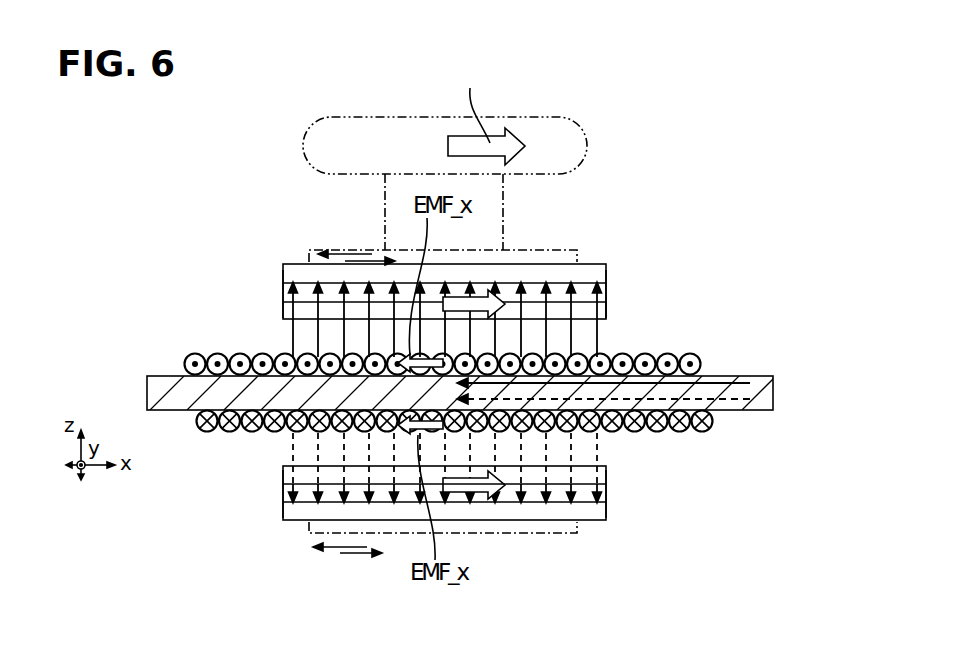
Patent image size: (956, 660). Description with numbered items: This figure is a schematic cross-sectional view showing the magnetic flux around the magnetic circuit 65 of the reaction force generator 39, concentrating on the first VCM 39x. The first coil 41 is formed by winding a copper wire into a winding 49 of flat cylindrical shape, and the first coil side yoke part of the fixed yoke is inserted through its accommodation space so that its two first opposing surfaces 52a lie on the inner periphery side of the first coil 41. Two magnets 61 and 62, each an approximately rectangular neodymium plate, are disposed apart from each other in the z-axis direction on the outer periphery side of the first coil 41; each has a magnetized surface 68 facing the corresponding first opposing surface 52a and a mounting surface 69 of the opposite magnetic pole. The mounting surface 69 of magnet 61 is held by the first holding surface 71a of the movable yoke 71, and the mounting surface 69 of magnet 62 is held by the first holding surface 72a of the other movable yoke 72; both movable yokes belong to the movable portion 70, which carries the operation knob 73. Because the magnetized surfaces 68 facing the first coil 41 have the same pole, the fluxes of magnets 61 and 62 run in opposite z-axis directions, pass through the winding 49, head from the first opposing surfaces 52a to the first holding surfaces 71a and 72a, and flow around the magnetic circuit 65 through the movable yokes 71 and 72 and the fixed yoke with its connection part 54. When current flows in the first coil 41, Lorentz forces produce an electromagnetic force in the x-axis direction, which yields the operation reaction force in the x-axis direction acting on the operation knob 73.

The movable portion 70 is at (445, 156).
The operation knob 73 is at (372, 116).
The reaction force generator 39 is at (604, 241).
The first VCM 39x is at (681, 309).
The movable yoke 71 is at (283, 264).
The first holding surface 71a is at (606, 290).
The magnet 61 is at (283, 300).
The mounting surface 69 is at (530, 275).
The magnetized surface 68 is at (298, 325).
The magnetic circuit 65 is at (464, 389).
The connection part 54 is at (752, 410).
The first opposing surface 52a is at (462, 389).
The first coil 41 is at (693, 355).
The winding 49 is at (707, 428).
The movable yoke 72 is at (283, 522).
The first holding surface 72a is at (606, 497).
The magnet 62 is at (283, 487).